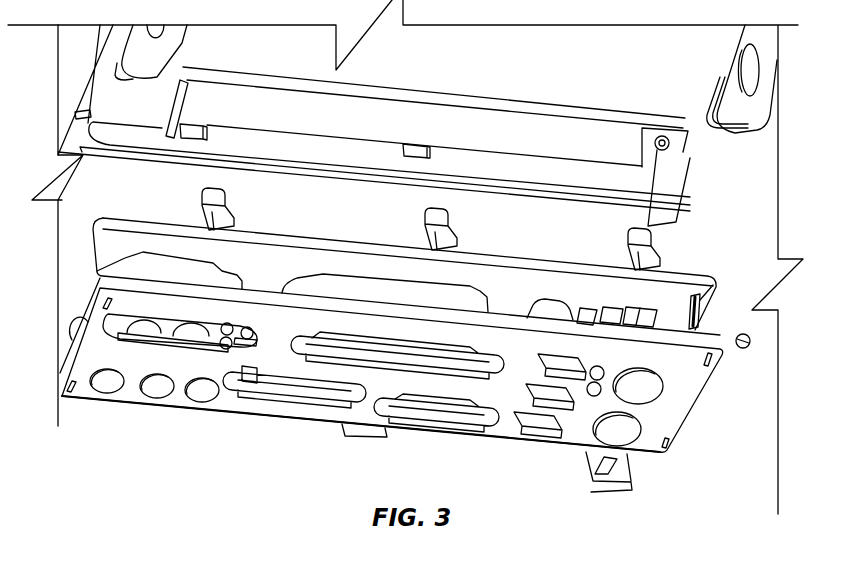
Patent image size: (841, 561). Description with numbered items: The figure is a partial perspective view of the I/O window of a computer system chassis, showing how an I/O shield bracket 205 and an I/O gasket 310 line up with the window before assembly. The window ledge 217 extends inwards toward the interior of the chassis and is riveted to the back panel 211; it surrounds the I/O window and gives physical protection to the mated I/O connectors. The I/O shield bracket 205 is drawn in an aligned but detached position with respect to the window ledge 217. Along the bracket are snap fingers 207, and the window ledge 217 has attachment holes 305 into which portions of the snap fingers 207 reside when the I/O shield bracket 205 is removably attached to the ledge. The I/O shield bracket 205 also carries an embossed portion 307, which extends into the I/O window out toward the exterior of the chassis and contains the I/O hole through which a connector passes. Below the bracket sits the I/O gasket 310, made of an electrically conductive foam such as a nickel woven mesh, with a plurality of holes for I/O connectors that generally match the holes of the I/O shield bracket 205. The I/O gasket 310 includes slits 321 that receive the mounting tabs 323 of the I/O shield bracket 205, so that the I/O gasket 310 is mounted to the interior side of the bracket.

The I/O shield bracket 205 is at (692, 282).
The snap fingers 207 is at (450, 222).
The back panel 211 is at (775, 213).
The window ledge 217 is at (693, 173).
The attachment holes 305 is at (200, 125).
The embossed portion 307 is at (538, 300).
The I/O gasket 310 is at (670, 455).
The slits 321 is at (710, 364).
The mounting tabs 323 is at (700, 295).